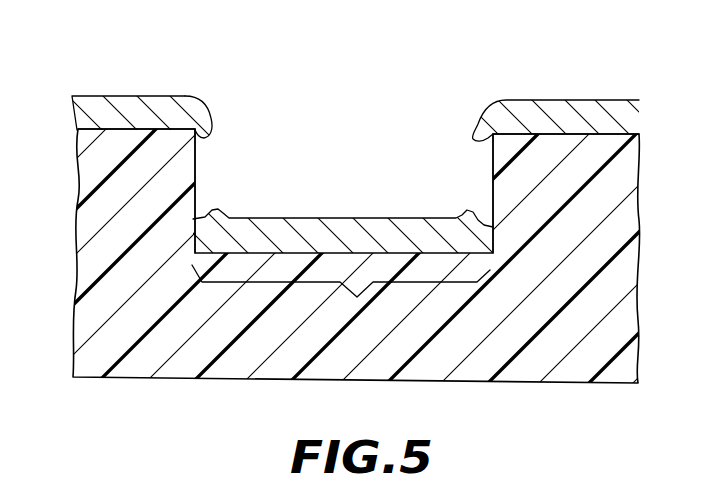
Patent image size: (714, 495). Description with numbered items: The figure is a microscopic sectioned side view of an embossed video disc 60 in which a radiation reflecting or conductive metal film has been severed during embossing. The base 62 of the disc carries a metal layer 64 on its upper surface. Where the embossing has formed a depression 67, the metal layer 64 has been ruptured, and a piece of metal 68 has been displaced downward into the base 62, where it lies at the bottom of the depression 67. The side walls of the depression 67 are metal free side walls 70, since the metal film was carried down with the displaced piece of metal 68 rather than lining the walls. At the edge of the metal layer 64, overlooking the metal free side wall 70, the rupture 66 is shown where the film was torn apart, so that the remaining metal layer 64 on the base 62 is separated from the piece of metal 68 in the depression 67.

The embossed video disc 60 is at (148, 377).
The base 62 is at (98, 312).
The metal layer 64 is at (107, 101).
The rupture 66 is at (205, 139).
The depression 67 is at (341, 299).
The piece of metal 68 is at (347, 218).
The metal free side wall 70 is at (195, 177).